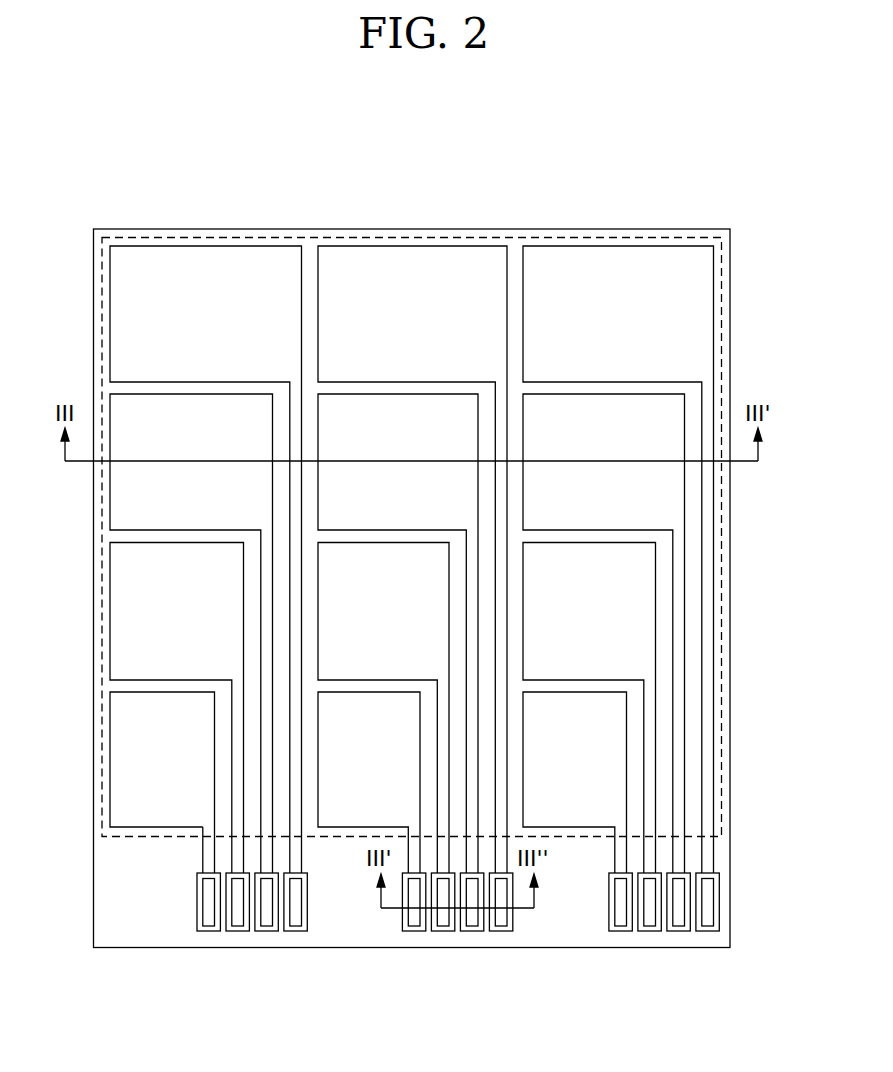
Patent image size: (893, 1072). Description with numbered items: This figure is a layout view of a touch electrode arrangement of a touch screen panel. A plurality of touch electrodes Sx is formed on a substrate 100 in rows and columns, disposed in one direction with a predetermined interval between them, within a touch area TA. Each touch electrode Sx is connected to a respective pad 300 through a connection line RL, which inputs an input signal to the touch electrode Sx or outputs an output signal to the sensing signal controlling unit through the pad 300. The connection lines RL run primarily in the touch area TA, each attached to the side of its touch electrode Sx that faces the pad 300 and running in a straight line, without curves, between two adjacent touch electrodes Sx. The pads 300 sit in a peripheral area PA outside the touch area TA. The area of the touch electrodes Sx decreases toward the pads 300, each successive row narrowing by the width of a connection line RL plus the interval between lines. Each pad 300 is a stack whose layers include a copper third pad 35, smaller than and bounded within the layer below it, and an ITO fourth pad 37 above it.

The substrate 100 is at (575, 948).
The touch area TA is at (205, 237).
The touch electrodes Sx is at (130, 773).
The connection lines RL is at (205, 853).
The peripheral area PA is at (130, 898).
The pad 300 is at (237, 959).
The fourth pad 37 is at (196, 918).
The third pad 35 is at (207, 928).